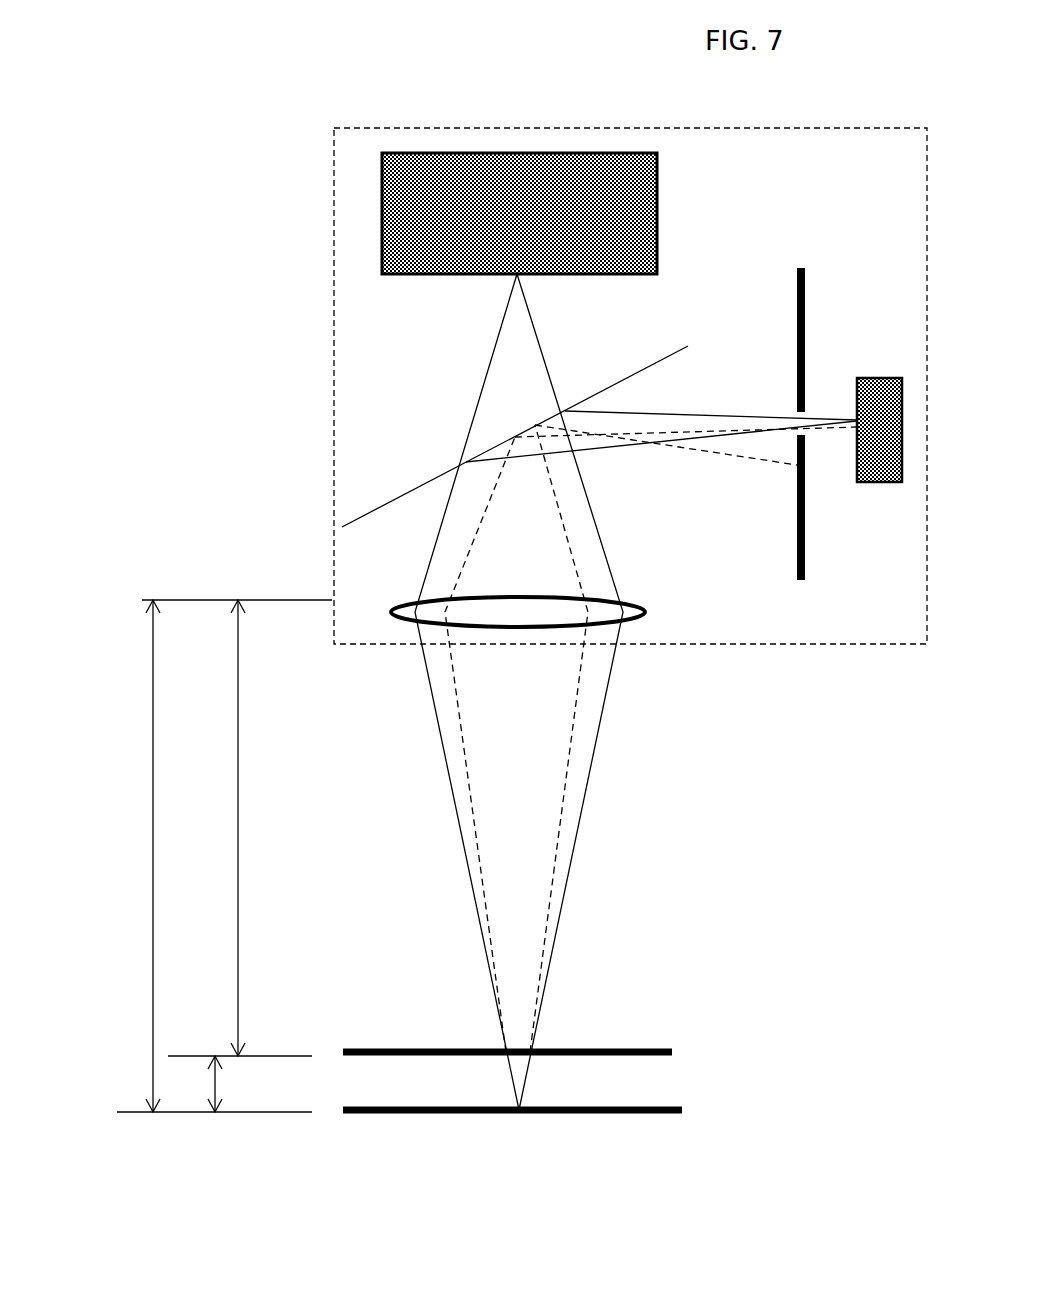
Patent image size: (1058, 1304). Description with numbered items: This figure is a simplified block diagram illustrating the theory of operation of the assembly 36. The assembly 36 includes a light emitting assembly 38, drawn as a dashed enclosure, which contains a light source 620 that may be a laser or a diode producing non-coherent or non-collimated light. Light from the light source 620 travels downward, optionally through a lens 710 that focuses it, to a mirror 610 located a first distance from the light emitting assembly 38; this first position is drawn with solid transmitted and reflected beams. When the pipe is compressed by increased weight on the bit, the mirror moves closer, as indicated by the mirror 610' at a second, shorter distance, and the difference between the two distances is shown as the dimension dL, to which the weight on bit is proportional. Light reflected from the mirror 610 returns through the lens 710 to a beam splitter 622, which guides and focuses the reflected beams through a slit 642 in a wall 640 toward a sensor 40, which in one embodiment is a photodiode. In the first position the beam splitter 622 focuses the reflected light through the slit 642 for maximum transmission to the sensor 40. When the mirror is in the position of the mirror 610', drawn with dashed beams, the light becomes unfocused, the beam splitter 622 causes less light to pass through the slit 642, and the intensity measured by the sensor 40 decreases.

The assembly 36 is at (222, 430).
The light emitting assembly 38 is at (333, 230).
The sensor 40 is at (877, 378).
The light source 620 is at (657, 213).
The beam splitter 622 is at (663, 357).
The wall 640 is at (805, 268).
The slit 642 is at (783, 412).
The lens 710 is at (643, 612).
The mirror 610 is at (559, 1083).
The mirror 610' is at (557, 1017).